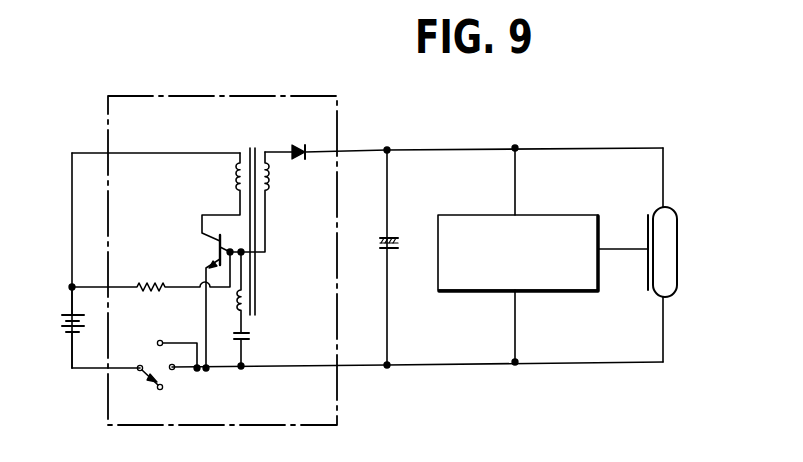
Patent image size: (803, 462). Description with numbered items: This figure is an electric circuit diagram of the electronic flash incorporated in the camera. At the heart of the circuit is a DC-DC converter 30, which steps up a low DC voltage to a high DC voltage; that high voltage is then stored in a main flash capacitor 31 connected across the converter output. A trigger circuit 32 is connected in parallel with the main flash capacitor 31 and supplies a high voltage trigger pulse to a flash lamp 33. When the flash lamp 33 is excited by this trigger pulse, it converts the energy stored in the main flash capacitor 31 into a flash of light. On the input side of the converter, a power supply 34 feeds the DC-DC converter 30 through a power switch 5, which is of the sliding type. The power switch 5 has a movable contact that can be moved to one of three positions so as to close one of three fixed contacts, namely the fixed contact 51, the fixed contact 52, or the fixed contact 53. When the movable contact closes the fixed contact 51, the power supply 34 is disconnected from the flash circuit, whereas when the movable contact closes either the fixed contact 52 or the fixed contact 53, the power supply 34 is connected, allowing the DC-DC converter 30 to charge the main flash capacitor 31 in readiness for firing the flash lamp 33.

The power switch 5 is at (144, 377).
The fixed contact 51 is at (163, 390).
The fixed contact 52 is at (173, 370).
The fixed contact 53 is at (157, 339).
The DC-DC converter 30 is at (326, 95).
The main flash capacitor 31 is at (392, 252).
The trigger circuit 32 is at (563, 215).
The flash lamp 33 is at (678, 218).
The power supply 34 is at (62, 314).